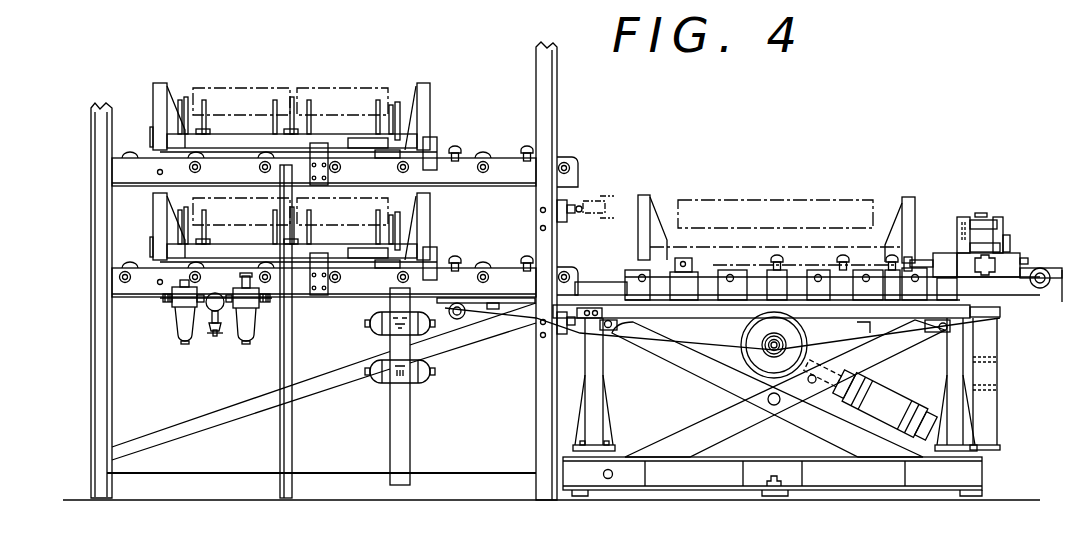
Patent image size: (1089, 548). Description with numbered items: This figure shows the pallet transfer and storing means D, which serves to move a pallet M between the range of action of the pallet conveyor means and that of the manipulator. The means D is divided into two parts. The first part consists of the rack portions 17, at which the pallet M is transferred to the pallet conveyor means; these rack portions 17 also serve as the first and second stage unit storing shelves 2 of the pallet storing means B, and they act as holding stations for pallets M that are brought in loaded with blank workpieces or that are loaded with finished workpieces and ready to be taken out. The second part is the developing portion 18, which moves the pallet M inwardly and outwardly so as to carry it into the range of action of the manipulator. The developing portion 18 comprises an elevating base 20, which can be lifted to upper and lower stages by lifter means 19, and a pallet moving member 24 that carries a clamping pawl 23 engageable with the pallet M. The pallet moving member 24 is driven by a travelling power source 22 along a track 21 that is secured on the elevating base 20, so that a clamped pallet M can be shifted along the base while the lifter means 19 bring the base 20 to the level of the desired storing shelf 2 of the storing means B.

The pallet storing means B is at (91, 118).
The pallet M is at (424, 97).
The first and second stage unit storing shelves 2 is at (501, 163).
The rack portions 17 is at (464, 152).
The developing portion 18 is at (837, 201).
The lifter means 19 is at (903, 400).
The elevating base 20 is at (660, 315).
The track 21 is at (596, 282).
The travelling power source 22 is at (745, 338).
The clamping pawl 23 is at (926, 252).
The pallet moving member 24 is at (1018, 262).
The pallet transfer and storing means D is at (1003, 217).